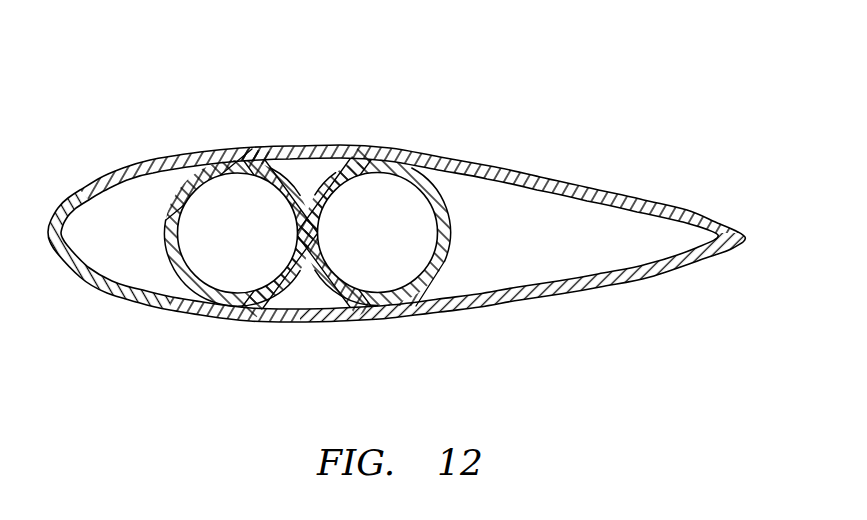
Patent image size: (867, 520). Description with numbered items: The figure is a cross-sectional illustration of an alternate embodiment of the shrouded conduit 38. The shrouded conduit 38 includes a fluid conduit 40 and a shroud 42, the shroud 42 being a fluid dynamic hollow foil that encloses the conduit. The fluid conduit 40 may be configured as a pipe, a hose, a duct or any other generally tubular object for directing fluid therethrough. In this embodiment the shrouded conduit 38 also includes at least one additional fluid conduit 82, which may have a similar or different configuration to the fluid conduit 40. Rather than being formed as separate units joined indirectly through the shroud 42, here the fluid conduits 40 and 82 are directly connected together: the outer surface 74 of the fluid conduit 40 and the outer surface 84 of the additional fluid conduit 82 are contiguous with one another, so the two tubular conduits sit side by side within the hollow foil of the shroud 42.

The shrouded conduit 38 is at (396, 213).
The shroud 42 is at (489, 159).
The fluid conduit 40 is at (168, 277).
The additional fluid conduit 82 is at (454, 268).
The outer surface of the fluid conduit 74 is at (290, 292).
The outer surface of the additional fluid conduit 84 is at (322, 292).